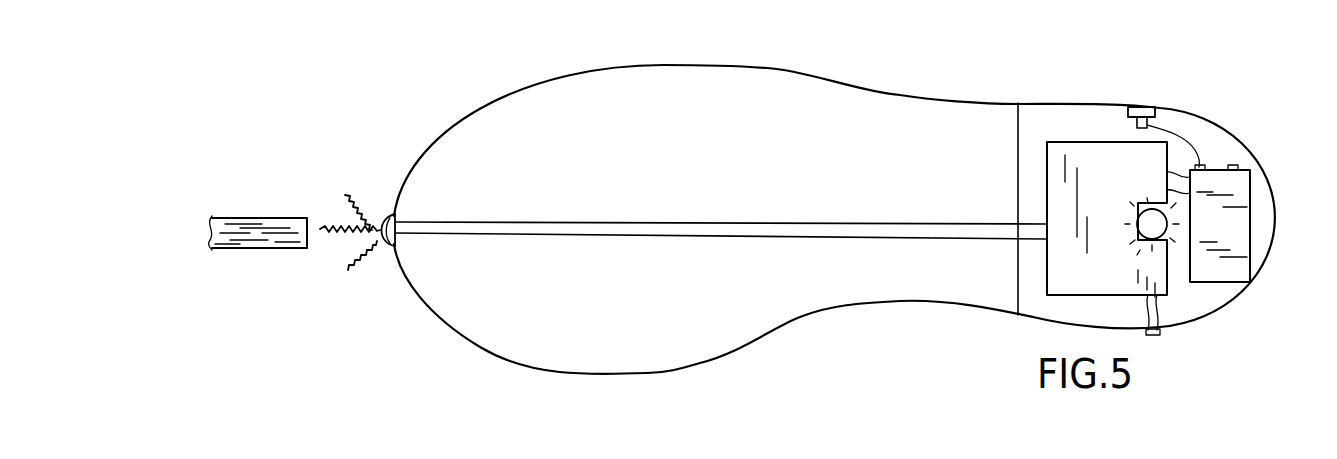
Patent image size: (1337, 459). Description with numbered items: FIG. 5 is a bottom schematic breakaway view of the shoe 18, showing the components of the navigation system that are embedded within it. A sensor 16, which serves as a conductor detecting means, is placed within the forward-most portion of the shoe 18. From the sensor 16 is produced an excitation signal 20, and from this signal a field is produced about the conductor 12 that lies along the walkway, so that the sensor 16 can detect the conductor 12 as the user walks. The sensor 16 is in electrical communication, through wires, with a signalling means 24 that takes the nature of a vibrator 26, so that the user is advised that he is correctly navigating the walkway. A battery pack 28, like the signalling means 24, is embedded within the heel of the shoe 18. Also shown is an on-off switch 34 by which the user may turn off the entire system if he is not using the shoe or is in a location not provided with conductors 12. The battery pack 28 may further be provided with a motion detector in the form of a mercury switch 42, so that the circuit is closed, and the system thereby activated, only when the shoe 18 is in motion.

The conductor 12 is at (280, 238).
The sensor 16 is at (381, 246).
The shoe 18 is at (783, 305).
The excitation signal 20 is at (346, 196).
The signalling means 24 is at (1073, 277).
The vibrator 26 is at (1137, 226).
The battery pack 28 is at (1220, 183).
The on-off switch 34 is at (1157, 335).
The mercury switch 42 is at (1140, 107).